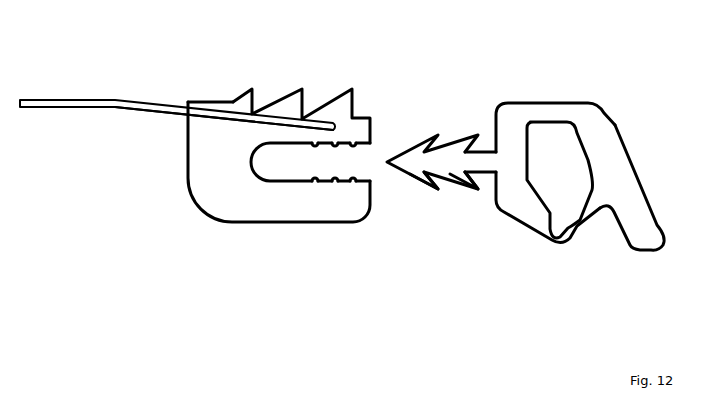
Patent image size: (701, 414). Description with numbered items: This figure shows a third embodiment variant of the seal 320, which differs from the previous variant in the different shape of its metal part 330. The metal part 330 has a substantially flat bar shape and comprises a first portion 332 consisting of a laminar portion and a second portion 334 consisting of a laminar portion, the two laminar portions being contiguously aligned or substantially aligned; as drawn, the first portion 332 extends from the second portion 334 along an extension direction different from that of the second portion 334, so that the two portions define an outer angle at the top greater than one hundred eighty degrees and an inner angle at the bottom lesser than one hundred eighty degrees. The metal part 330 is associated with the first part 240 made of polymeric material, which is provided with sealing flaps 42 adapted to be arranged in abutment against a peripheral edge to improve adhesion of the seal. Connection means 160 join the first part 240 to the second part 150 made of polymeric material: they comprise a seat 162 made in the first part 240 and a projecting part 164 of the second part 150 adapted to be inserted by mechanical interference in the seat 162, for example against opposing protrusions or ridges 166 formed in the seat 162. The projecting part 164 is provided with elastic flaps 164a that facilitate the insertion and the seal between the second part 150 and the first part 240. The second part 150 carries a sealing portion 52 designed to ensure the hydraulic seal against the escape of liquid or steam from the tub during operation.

The sealing flaps 42 is at (247, 103).
The sealing portion 52 is at (642, 260).
The second part made of polymeric material 150 is at (572, 263).
The connection means 160 is at (427, 300).
The seat 162 is at (365, 160).
The projecting part 164 is at (444, 160).
The elastic flaps 164a is at (422, 184).
The opposing protrusions or ridges 166 is at (343, 142).
The first part made of polymeric material 240 is at (310, 257).
The seal 320 is at (128, 270).
The metal part 330 is at (117, 147).
The first portion 332 is at (226, 118).
The second portion 334 is at (87, 104).